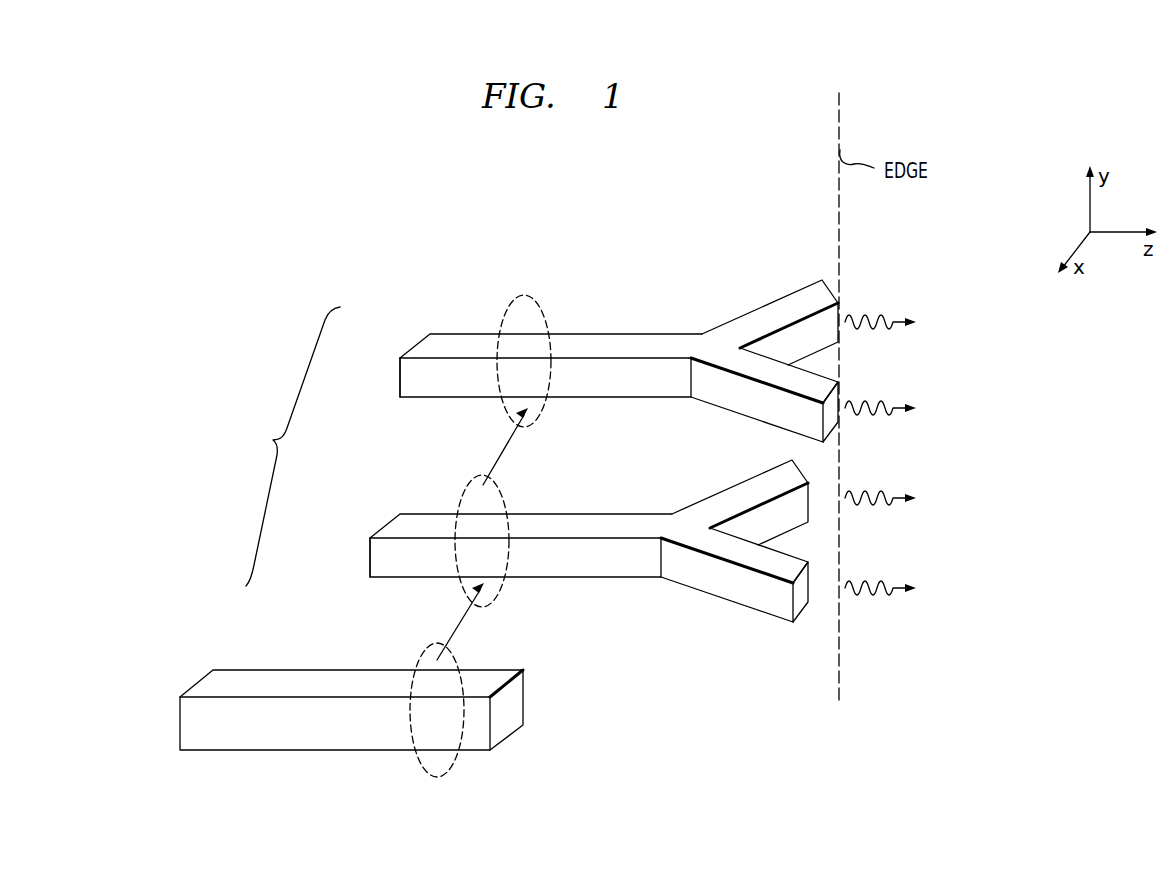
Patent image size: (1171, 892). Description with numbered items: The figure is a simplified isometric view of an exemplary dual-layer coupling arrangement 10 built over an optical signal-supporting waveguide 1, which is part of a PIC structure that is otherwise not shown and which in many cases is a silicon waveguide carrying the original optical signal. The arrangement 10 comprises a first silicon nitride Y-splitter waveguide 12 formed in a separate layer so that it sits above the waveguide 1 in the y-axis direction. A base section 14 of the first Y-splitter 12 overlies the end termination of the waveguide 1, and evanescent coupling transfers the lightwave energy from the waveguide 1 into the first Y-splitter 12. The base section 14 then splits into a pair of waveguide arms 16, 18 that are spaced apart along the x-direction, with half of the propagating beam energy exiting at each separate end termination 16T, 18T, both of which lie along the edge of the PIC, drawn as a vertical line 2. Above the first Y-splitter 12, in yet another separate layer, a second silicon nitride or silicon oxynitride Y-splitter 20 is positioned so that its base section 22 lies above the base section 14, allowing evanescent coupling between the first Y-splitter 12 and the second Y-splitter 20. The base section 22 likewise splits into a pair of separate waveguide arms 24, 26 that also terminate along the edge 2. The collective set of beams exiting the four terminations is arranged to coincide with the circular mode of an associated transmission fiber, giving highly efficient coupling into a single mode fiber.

The optical signal-supporting waveguide 1 is at (247, 740).
The edge of the PIC 2 is at (838, 128).
The dual-layer coupling arrangement 10 is at (265, 447).
The first silicon nitride Y-splitter waveguide 12 is at (608, 544).
The base section of first Y-splitter 14 is at (370, 558).
The waveguide arm 16 is at (784, 588).
The end termination of waveguide arm 16 16T is at (802, 597).
The waveguide arm 18 is at (786, 492).
The end termination of waveguide arm 18 18T is at (808, 477).
The second Y-splitter 20 is at (591, 352).
The base section of second Y-splitter 22 is at (405, 352).
The waveguide arm 24 is at (775, 378).
The waveguide arm 26 is at (774, 308).